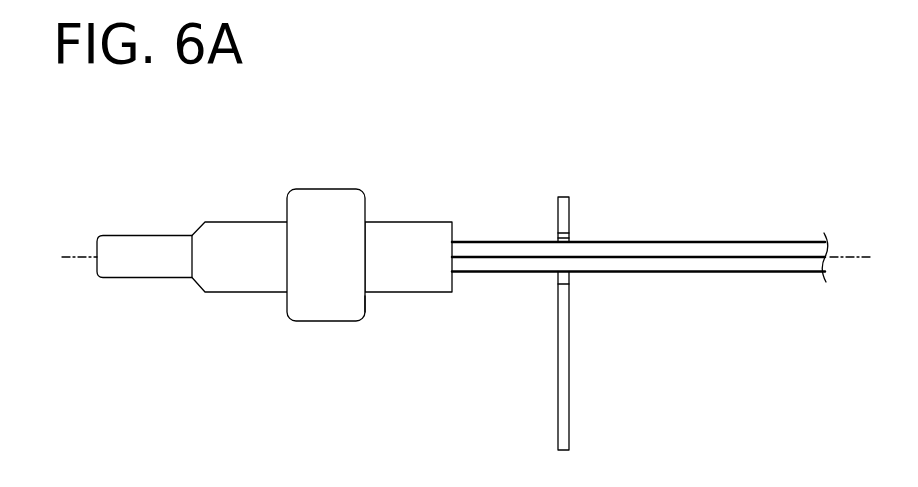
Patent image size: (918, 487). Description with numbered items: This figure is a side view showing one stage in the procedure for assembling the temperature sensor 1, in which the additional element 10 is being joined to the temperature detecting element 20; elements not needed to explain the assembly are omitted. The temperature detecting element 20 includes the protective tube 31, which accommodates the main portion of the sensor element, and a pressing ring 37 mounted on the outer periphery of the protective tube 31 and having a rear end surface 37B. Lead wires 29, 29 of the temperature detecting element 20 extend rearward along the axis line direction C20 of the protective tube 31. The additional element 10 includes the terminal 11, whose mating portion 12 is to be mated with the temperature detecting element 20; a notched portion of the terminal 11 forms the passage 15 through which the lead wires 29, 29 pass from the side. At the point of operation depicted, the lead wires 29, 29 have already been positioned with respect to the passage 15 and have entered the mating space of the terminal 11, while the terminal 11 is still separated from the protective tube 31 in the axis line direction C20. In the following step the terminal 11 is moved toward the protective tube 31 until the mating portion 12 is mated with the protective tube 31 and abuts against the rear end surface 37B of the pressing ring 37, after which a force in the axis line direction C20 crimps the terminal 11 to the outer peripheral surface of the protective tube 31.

The temperature sensor 1 is at (462, 176).
The additional element 10 is at (640, 176).
The terminal 11 is at (569, 371).
The mating portion 12 is at (557, 218).
The passage 15 is at (571, 243).
The temperature detecting element 20 is at (407, 176).
The lead wires 29 is at (703, 241).
The protective tube 31 is at (237, 222).
The pressing ring 37 is at (313, 189).
The rear end surface 37B is at (366, 303).
The axis line direction C20 is at (63, 257).